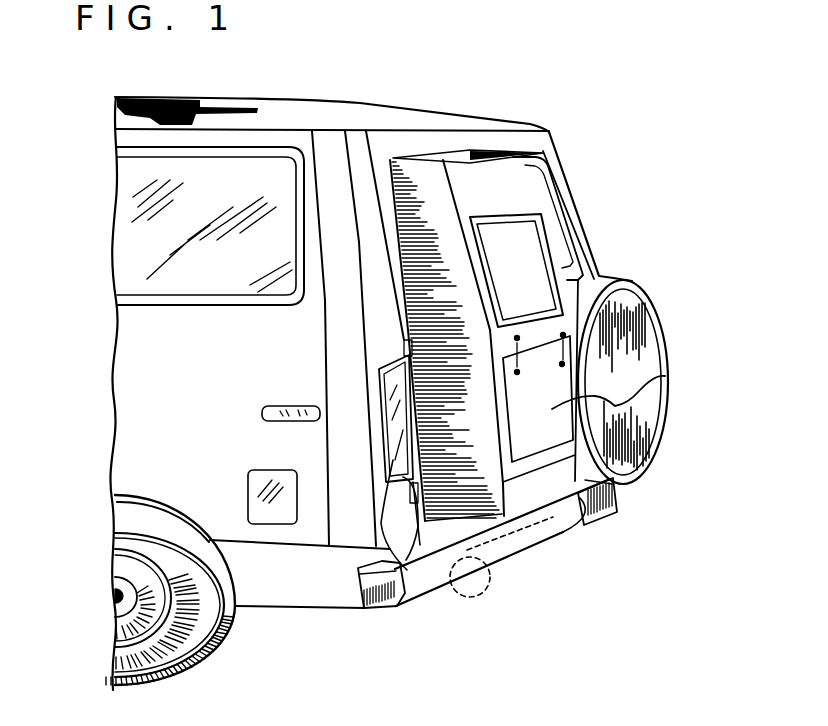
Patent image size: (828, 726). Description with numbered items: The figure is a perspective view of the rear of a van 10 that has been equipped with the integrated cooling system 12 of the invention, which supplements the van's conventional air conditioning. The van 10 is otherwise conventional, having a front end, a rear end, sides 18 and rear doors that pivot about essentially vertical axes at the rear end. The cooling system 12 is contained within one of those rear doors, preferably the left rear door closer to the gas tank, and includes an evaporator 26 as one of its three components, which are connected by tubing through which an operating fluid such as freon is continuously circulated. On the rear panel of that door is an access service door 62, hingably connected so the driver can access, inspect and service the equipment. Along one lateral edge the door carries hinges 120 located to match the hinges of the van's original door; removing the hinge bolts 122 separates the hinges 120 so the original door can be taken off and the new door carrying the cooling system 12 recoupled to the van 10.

The van 10 is at (499, 106).
The cooling system 12 is at (631, 280).
The sides 18 is at (125, 432).
The evaporator 26 is at (547, 482).
The access service door 62 is at (665, 376).
The hinges 120 is at (385, 607).
The hinge bolts 122 is at (418, 527).